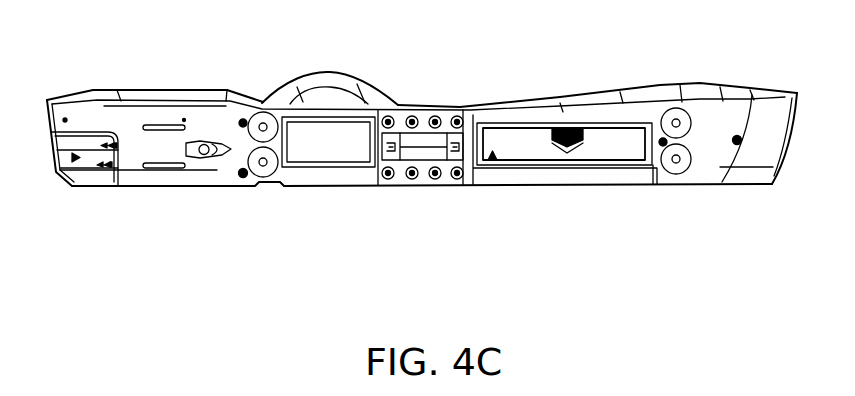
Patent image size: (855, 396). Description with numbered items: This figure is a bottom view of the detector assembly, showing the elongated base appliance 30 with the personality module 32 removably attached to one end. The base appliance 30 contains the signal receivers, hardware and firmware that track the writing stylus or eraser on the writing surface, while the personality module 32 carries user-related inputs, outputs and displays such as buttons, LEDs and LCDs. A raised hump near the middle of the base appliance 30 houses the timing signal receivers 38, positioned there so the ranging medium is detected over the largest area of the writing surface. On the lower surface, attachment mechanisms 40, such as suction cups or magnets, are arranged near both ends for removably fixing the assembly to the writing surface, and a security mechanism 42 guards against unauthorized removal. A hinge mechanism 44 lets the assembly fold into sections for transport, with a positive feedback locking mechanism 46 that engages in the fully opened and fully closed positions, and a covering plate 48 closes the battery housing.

The base appliance 30 is at (563, 108).
The personality module 32 is at (66, 186).
The timing signal receivers 38 is at (330, 72).
The attachment mechanisms 40 is at (250, 133).
The security mechanism 42 is at (278, 183).
The hinge mechanism 44 is at (425, 112).
The positive feedback locking mechanism 46 is at (424, 112).
The covering plate 48 is at (533, 157).